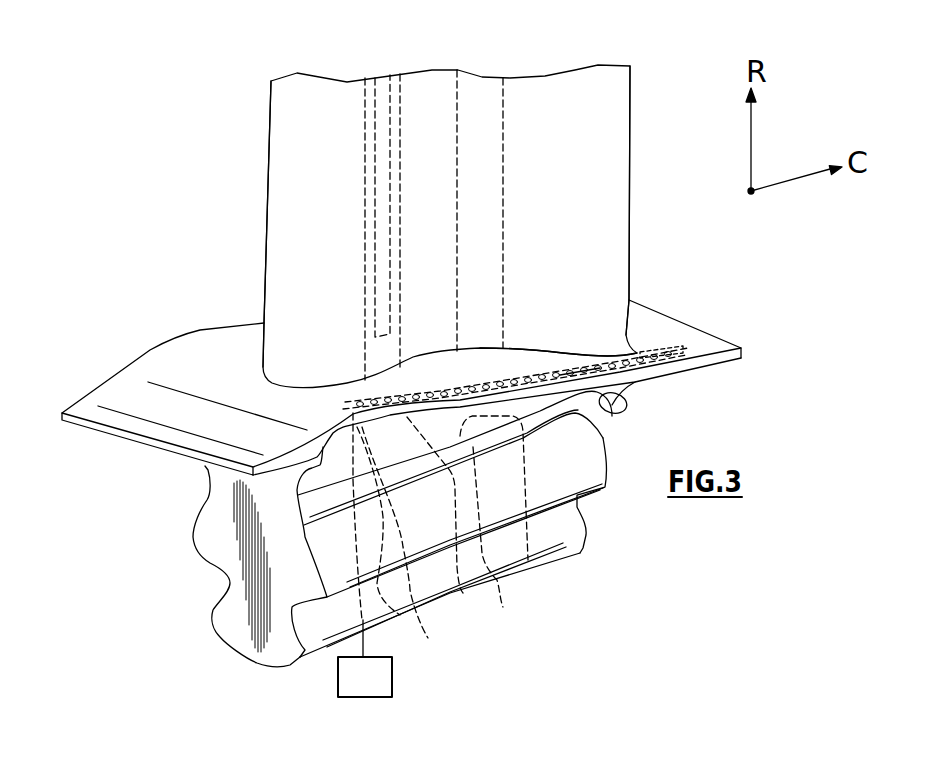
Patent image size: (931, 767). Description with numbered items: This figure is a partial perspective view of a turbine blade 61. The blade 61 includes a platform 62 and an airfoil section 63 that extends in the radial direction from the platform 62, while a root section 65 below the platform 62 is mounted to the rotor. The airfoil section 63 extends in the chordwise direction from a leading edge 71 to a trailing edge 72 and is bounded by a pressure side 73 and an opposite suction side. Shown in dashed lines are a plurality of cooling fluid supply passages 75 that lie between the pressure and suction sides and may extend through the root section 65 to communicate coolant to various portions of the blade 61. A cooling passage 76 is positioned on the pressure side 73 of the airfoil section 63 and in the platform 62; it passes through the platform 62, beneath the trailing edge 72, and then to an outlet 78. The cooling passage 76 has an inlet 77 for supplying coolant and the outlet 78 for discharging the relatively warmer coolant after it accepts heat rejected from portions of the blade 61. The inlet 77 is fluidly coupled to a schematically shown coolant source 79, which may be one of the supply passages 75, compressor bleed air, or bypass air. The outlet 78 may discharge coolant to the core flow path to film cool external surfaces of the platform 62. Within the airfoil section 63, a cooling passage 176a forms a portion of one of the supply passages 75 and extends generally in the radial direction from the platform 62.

The blade 61 is at (684, 75).
The platform 62 is at (122, 418).
The airfoil section 63 is at (296, 129).
The root section 65 is at (578, 510).
The leading edge 71 is at (264, 222).
The trailing edge 72 is at (630, 195).
The pressure side 73 is at (540, 267).
The cooling fluid supply passages 75 is at (377, 103).
The cooling passage 76 is at (577, 378).
The inlet 77 is at (347, 405).
The outlet 78 is at (670, 350).
The coolant source 79 is at (338, 666).
The cooling passage 176a is at (378, 148).